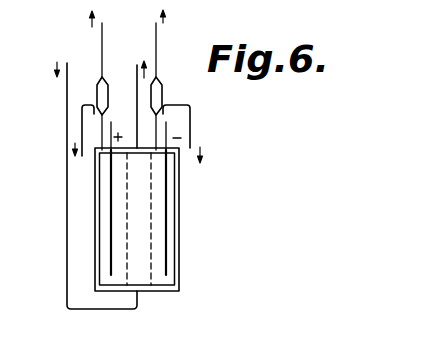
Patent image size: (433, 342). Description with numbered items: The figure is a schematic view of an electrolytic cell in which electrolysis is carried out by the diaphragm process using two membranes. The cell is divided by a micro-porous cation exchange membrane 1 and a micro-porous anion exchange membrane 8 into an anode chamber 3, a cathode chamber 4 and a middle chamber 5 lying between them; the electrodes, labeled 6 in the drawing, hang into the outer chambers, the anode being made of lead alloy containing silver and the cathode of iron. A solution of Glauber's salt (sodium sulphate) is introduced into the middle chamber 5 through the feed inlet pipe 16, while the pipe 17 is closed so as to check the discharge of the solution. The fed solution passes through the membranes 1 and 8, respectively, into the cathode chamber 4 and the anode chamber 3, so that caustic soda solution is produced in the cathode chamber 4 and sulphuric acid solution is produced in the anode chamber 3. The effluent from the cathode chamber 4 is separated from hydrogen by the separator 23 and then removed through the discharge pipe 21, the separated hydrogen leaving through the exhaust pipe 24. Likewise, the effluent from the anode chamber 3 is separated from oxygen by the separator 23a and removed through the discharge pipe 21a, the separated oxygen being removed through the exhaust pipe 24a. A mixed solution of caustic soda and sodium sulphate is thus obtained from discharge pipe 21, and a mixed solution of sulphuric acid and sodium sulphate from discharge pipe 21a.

The micro-porous cation exchange membrane 1 is at (151, 243).
The anode chamber 3 is at (102, 252).
The cathode chamber 4 is at (173, 263).
The middle chamber 5 is at (143, 207).
The electrode lead 6 is at (170, 121).
The micro-porous anion exchange membrane 8 is at (127, 198).
The feed inlet pipe 16 is at (67, 125).
The pipe 17 is at (137, 80).
The discharge pipe 21 is at (192, 133).
The discharge pipe 21a is at (82, 137).
The separator 23 is at (163, 86).
The separator 23a is at (97, 87).
The exhaust pipe 24 is at (157, 43).
The exhaust pipe 24a is at (103, 35).